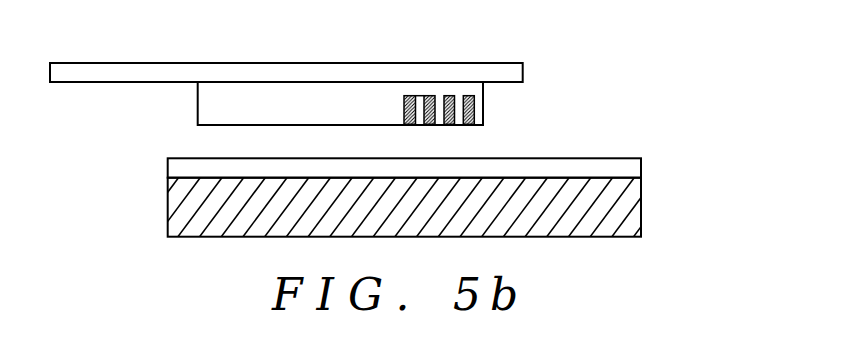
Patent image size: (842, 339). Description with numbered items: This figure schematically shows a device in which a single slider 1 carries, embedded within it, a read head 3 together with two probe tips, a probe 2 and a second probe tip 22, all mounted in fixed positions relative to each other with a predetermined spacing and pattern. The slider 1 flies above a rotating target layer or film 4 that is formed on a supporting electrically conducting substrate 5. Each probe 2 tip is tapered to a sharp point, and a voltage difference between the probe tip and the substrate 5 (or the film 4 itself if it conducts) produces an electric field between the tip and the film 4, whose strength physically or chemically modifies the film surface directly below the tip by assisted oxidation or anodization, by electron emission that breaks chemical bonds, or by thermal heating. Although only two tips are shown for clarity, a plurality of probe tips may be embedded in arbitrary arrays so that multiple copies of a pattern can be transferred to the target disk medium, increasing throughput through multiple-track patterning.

The slider 1 is at (198, 97).
The probe 2 is at (473, 106).
The read head 3 is at (404, 109).
The probe tip 22 is at (446, 96).
The target layer or film 4 is at (641, 166).
The supporting electrically conducting substrate 5 is at (641, 203).